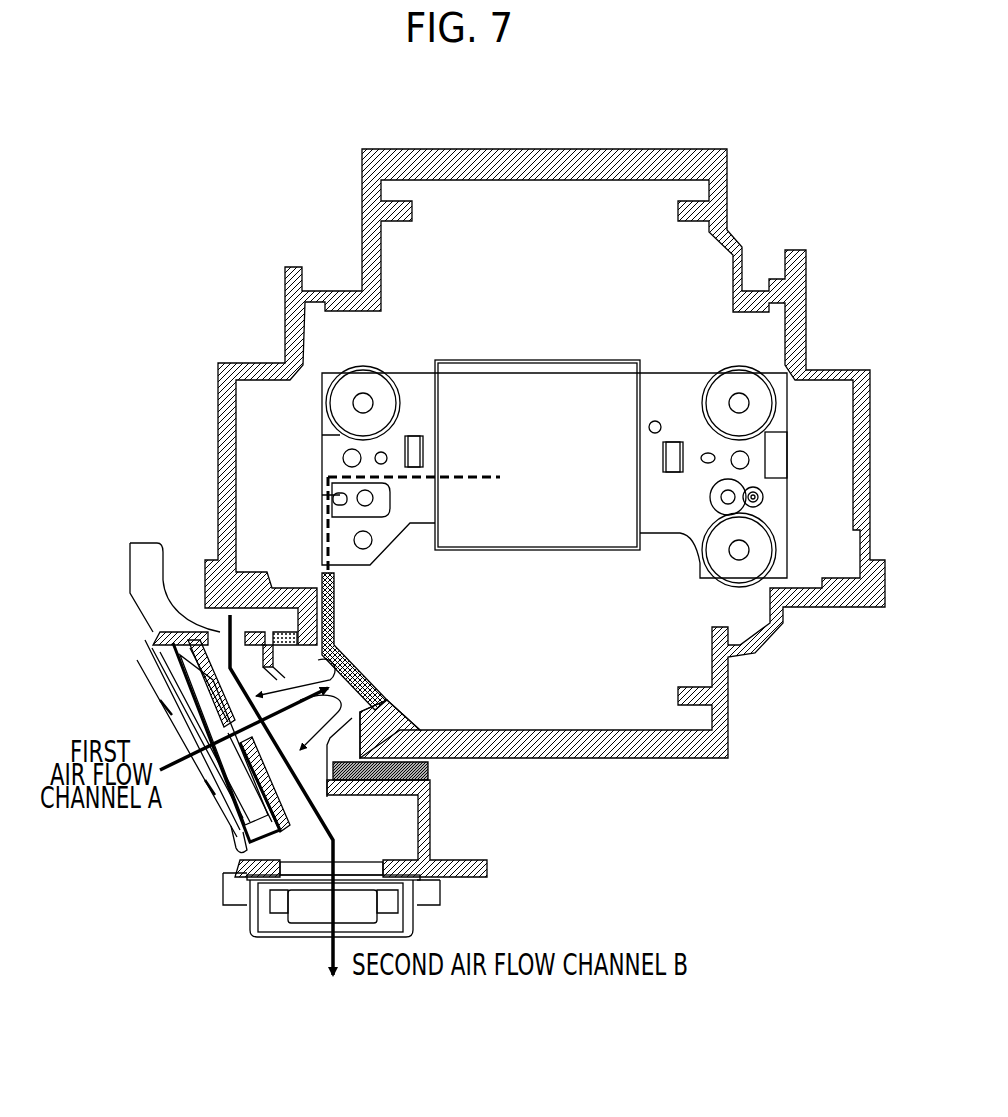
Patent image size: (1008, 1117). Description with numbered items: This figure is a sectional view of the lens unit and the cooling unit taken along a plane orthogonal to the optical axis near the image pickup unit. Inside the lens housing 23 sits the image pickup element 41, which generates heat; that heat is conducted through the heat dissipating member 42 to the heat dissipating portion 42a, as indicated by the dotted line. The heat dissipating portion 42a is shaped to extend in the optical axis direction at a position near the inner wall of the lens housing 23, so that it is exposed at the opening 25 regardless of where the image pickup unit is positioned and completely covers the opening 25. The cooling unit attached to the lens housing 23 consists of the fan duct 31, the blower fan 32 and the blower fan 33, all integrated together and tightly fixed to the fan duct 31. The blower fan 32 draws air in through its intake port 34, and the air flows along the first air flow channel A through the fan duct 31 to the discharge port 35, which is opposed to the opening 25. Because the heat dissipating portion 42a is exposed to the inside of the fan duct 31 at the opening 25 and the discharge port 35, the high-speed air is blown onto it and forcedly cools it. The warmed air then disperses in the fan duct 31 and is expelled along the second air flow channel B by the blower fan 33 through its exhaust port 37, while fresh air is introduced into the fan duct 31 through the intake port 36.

The lens housing 23 is at (362, 228).
The opening 25 is at (380, 718).
The fan duct 31 is at (430, 838).
The blower fan 32 is at (213, 733).
The blower fan 33 is at (318, 903).
The intake port 34 is at (210, 787).
The discharge port 35 is at (242, 845).
The intake port 36 is at (220, 637).
The exhaust port 37 is at (275, 935).
The image pickup element 41 is at (470, 395).
The heat dissipating member 42 is at (327, 450).
The heat dissipating portion 42a is at (360, 667).